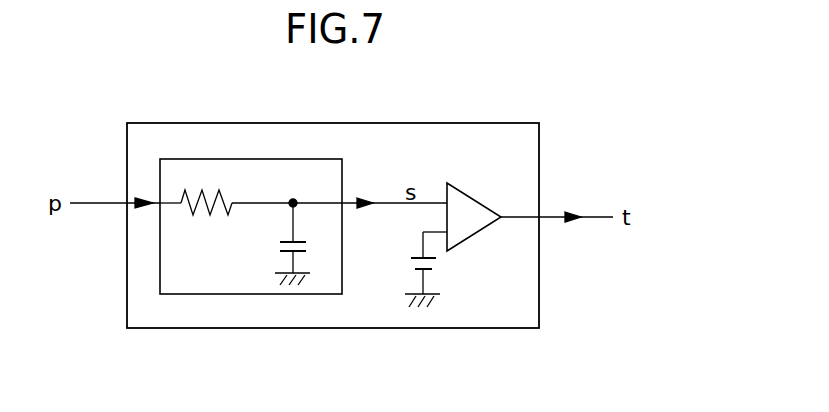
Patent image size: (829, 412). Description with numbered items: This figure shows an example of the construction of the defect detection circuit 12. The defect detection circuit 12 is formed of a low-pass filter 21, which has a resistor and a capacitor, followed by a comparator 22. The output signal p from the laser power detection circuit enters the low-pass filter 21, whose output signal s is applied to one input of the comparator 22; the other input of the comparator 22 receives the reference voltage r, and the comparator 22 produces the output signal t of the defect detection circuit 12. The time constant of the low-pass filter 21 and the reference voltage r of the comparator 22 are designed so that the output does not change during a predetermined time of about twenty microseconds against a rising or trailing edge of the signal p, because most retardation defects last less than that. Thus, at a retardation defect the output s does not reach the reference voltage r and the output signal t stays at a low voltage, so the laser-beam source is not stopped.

The defect detection circuit 12 is at (333, 124).
The low-pass filter 21 is at (252, 294).
The comparator 22 is at (475, 198).